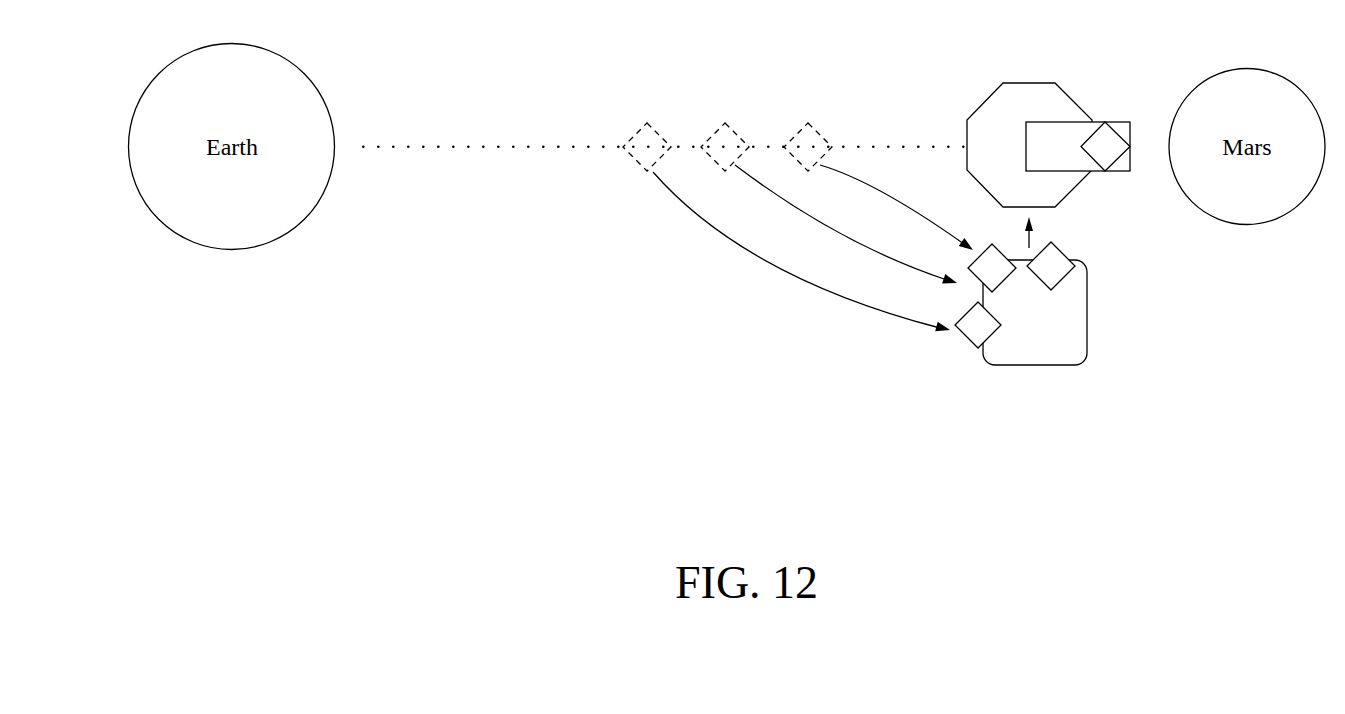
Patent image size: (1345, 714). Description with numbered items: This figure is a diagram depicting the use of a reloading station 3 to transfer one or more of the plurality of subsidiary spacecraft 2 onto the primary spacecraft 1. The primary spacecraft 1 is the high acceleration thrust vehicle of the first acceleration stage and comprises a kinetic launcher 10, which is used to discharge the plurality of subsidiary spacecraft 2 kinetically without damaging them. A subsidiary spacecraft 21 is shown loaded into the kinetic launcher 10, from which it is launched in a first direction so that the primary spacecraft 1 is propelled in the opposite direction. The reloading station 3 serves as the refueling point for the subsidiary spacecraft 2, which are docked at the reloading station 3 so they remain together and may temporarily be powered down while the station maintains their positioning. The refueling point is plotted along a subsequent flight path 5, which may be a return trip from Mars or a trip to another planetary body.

The primary spacecraft 1 is at (1040, 85).
The kinetic launcher 10 is at (1120, 164).
The subsidiary spacecraft 21 is at (1105, 133).
The plurality of subsidiary spacecraft 2 is at (1057, 277).
The reloading station 3 is at (1053, 358).
The subsequent flight path 5 is at (455, 147).